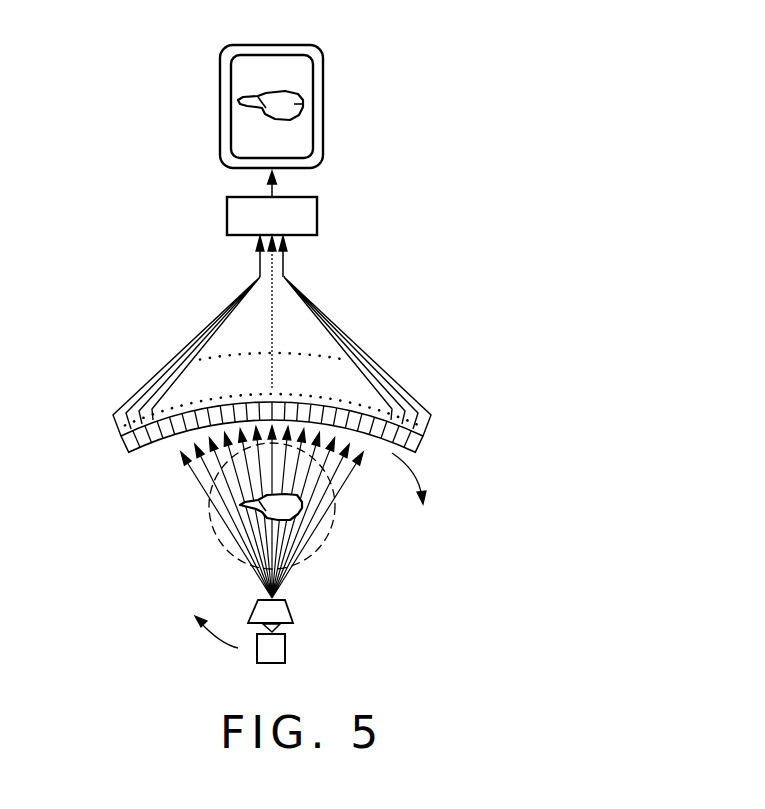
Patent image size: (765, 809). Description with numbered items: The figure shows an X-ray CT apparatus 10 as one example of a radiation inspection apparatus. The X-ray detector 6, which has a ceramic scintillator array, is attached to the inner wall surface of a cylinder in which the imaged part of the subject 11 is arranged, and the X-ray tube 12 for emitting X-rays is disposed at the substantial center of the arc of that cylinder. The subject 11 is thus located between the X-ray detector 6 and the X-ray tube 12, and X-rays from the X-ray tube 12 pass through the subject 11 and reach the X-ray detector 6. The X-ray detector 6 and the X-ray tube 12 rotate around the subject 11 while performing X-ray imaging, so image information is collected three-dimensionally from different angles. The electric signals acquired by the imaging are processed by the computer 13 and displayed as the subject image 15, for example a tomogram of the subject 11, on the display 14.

The X-ray detector 6 is at (115, 450).
The X-ray CT apparatus 10 is at (399, 308).
The subject 11 is at (293, 505).
The X-ray tube 12 is at (285, 648).
The computer 13 is at (317, 216).
The display 14 is at (313, 72).
The subject image 15 is at (296, 105).